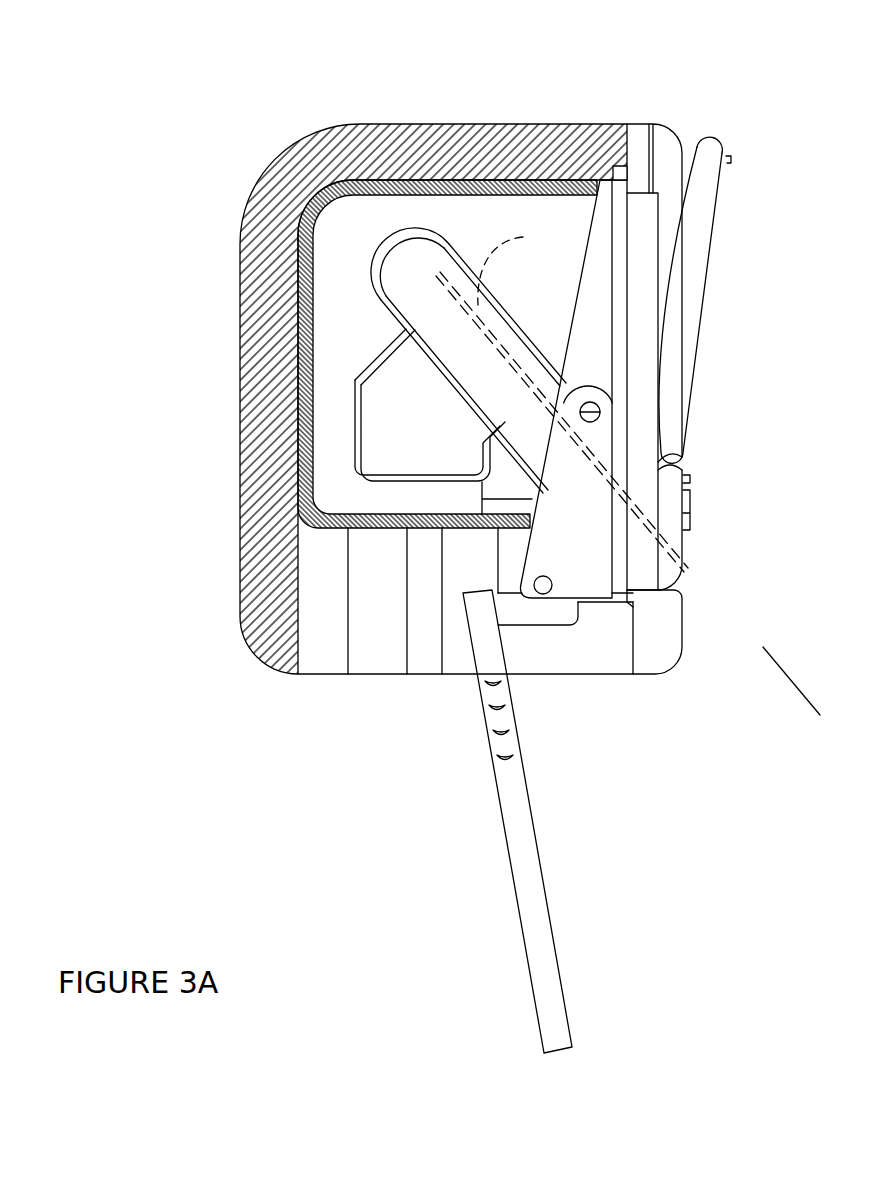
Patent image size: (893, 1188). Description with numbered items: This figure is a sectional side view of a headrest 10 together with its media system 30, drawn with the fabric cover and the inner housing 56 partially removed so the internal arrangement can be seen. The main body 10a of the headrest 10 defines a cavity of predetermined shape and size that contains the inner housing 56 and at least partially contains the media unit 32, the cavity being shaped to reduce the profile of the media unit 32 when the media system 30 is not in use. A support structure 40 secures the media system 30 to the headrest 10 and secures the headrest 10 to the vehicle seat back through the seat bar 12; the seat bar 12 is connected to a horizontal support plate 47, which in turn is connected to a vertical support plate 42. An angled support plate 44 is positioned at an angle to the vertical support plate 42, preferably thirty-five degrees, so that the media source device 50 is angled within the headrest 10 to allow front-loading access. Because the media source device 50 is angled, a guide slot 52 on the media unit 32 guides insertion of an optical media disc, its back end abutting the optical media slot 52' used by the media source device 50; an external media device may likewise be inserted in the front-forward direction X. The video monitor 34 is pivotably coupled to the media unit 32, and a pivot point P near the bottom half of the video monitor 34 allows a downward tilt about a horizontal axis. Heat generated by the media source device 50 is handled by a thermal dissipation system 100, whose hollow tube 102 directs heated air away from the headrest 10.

The headrest 10 is at (178, 150).
The main body 10a is at (403, 123).
The hollow tube 102 is at (385, 677).
The inner housing 56 is at (300, 417).
The media source device 50 is at (415, 250).
The thermal dissipation system 100 is at (390, 413).
The angled support plate 44 is at (505, 473).
The support structure 40 is at (600, 178).
The vertical support plate 42 is at (618, 192).
The media unit 32 is at (655, 343).
The media system 30 is at (705, 315).
The video monitor 34 is at (697, 238).
The pivot point P is at (683, 457).
The guide slot 52 is at (605, 447).
The optical media slot 52' is at (513, 270).
The horizontal support plate 47 is at (515, 620).
The seat bar 12 is at (527, 918).
The direction X is at (791, 681).